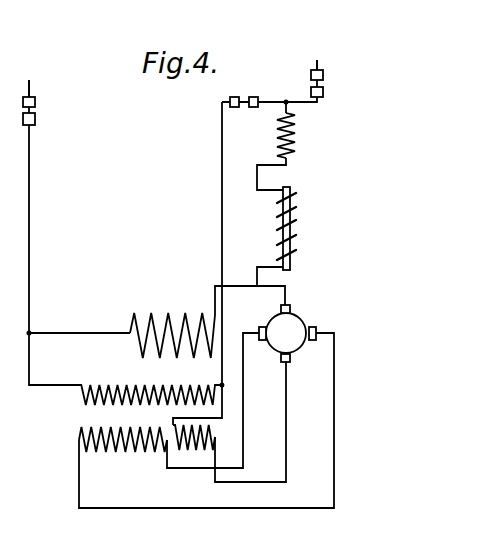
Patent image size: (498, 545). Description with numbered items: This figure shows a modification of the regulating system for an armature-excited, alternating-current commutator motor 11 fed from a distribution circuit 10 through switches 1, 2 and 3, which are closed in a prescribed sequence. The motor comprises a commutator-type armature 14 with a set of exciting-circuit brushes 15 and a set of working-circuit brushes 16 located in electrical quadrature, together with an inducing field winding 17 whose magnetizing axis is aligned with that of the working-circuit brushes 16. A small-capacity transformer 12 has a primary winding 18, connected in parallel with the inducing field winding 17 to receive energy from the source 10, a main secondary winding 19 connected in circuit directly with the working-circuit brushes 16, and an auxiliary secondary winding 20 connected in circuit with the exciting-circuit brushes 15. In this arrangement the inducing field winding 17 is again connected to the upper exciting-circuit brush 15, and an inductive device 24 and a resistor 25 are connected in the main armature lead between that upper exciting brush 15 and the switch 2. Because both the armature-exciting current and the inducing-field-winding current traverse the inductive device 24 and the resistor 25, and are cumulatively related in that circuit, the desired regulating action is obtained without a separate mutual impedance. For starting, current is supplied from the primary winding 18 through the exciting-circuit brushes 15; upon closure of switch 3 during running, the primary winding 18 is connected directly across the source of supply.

The switch 1 is at (23, 111).
The switch 2 is at (324, 92).
The switch 3 is at (241, 108).
The distribution circuit 10 is at (30, 82).
The alternating-current commutator motor 11 is at (289, 335).
The transformer 12 is at (55, 428).
The armature 14 is at (286, 333).
The exciting-circuit brushes 15 is at (281, 307).
The working-circuit brushes 16 is at (260, 327).
The inducing field winding 17 is at (163, 320).
The primary winding 18 is at (91, 392).
The main secondary winding 19 is at (104, 427).
The auxiliary secondary winding 20 is at (212, 437).
The inductive device 24 is at (289, 247).
The resistor 25 is at (294, 140).